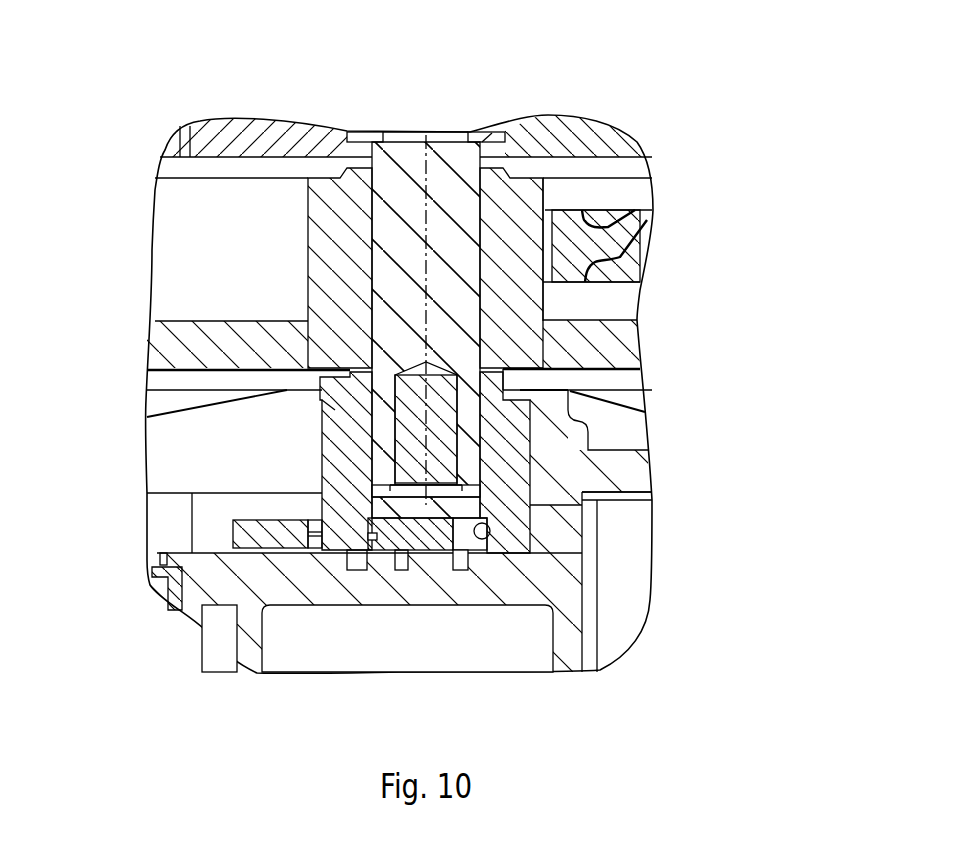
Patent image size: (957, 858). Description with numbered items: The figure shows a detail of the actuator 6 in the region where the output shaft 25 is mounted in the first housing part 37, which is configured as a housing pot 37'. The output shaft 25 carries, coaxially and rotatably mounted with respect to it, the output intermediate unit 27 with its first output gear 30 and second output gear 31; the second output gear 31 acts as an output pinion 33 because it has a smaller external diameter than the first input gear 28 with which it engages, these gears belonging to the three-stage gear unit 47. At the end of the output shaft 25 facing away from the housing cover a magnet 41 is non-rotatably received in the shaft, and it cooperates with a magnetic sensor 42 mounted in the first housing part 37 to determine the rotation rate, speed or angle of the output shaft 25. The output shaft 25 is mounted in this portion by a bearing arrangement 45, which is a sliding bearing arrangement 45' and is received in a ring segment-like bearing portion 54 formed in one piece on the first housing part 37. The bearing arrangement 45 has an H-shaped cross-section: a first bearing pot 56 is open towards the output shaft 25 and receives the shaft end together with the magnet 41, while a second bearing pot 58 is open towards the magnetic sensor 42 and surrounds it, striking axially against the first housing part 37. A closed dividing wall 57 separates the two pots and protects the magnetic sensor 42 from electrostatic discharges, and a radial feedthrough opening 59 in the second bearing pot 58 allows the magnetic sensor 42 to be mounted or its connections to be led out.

The actuator 6 is at (700, 141).
The output shaft 25 is at (447, 148).
The output intermediate unit 27 is at (193, 290).
The first input gear 28 is at (630, 238).
The first output gear 30 is at (160, 343).
The second output gear 31 is at (333, 236).
The output pinion 33 is at (333, 236).
The first housing part 37 is at (449, 582).
The housing pot 37' is at (628, 582).
The magnet 41 is at (403, 435).
The magnetic sensor 42 is at (418, 535).
The bearing arrangement 45 is at (613, 462).
The sliding bearing arrangement 45' is at (599, 450).
The gear unit 47 is at (196, 212).
The bearing portion 54 is at (165, 452).
The first bearing pot 56 is at (493, 408).
The dividing wall 57 is at (388, 505).
The second bearing pot 58 is at (478, 522).
The radial feedthrough opening 59 is at (462, 540).